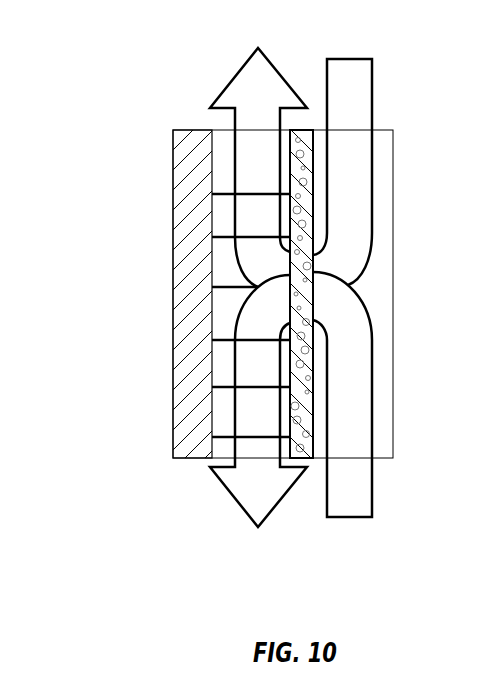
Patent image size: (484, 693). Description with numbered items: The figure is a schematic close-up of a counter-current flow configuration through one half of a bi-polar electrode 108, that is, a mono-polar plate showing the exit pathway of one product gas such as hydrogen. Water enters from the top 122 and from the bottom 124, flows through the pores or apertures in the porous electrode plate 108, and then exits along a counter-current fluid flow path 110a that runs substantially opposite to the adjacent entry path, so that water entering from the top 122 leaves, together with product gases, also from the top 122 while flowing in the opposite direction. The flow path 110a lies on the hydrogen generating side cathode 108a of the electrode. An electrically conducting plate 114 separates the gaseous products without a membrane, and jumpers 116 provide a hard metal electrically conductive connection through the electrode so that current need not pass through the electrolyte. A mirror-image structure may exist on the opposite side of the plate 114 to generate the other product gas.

The electrode 108 is at (242, 274).
The hydrogen generating side cathode 108a is at (316, 128).
The fluid flow path 110a is at (222, 125).
The electrically conducting plate 114 is at (188, 305).
The jumpers 116 is at (258, 195).
The top 122 is at (388, 127).
The bottom 124 is at (384, 467).